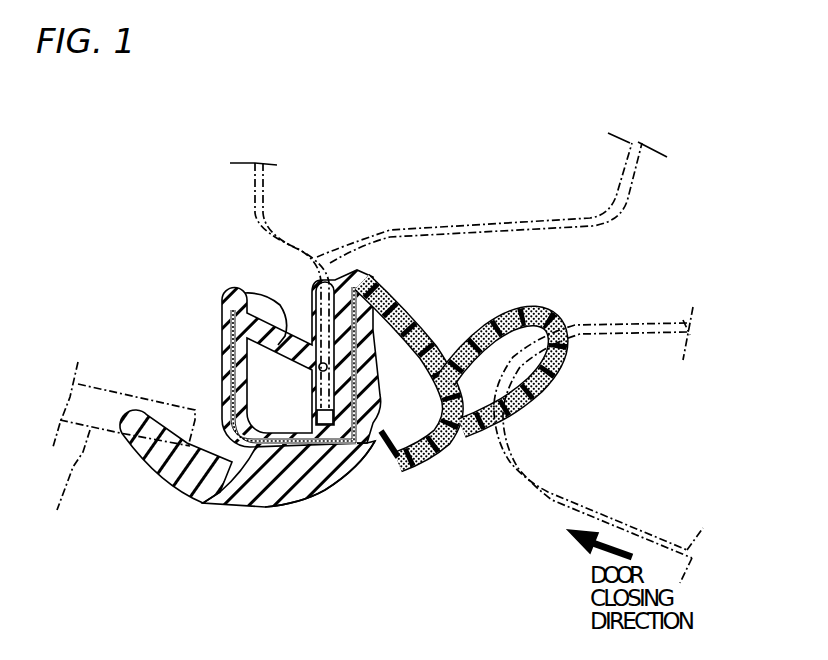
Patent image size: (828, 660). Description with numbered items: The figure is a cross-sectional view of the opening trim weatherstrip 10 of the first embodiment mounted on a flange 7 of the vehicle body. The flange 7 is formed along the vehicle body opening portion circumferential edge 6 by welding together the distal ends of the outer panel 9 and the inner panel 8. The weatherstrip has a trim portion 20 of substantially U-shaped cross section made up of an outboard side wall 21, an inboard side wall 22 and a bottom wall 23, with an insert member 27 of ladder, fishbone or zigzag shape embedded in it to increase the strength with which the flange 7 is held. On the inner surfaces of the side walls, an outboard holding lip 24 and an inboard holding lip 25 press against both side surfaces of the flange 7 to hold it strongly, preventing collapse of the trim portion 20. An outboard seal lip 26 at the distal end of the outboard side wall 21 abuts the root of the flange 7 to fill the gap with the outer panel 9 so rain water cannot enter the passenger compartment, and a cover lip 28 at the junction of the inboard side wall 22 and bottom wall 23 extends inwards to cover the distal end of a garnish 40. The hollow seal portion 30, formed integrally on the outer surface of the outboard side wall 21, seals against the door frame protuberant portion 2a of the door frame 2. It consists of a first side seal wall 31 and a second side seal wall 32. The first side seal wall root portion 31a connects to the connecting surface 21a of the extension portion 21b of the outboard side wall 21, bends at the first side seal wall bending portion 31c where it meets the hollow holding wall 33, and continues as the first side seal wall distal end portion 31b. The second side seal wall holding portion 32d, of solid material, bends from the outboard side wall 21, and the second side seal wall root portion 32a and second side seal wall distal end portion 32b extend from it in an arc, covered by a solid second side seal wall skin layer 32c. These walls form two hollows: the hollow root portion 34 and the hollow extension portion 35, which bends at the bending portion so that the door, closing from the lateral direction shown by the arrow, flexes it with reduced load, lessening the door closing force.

The door frame 2 is at (670, 313).
The door frame protuberant portion 2a is at (578, 322).
The vehicle body opening portion circumferential edge 6 is at (623, 202).
The flange 7 is at (323, 362).
The inner panel 8 is at (256, 214).
The outer panel 9 is at (618, 177).
The opening trim weatherstrip 10 is at (228, 244).
The trim portion 20 is at (249, 510).
The outboard side wall 21 is at (367, 445).
The connecting surface 21a is at (373, 278).
The extension portion 21b is at (353, 278).
The inboard side wall 22 is at (223, 348).
The bottom wall 23 is at (203, 503).
The outboard holding lip 24 is at (321, 432).
The inboard holding lip 25 is at (245, 293).
The outboard seal lip 26 is at (315, 284).
The insert member 27 is at (233, 380).
The cover lip 28 is at (155, 477).
The hollow seal portion 30 is at (485, 450).
The first side seal wall 31 is at (440, 312).
The first side seal wall root portion 31a is at (404, 320).
The first side seal wall distal end portion 31b is at (517, 315).
The first side seal wall bending portion 31c is at (463, 390).
The second side seal wall 32 is at (480, 417).
The second side seal wall root portion 32a is at (400, 397).
The second side seal wall distal end portion 32b is at (450, 378).
The second side seal wall skin layer 32c is at (458, 415).
The second side seal wall holding portion 32d is at (390, 468).
The hollow holding wall 33 is at (490, 428).
The hollow root portion 34 is at (470, 446).
The hollow extension portion 35 is at (497, 350).
The garnish 40 is at (117, 456).